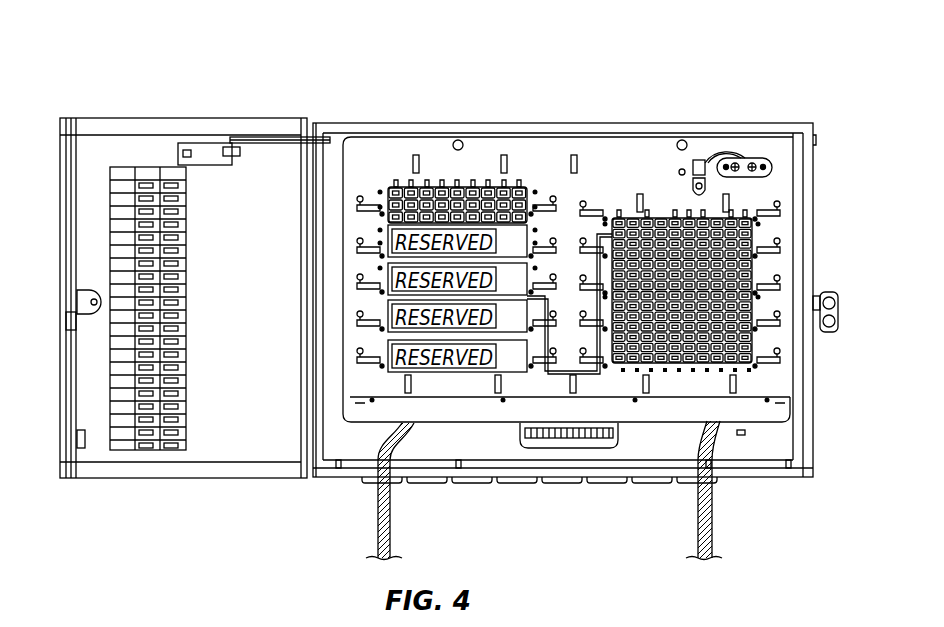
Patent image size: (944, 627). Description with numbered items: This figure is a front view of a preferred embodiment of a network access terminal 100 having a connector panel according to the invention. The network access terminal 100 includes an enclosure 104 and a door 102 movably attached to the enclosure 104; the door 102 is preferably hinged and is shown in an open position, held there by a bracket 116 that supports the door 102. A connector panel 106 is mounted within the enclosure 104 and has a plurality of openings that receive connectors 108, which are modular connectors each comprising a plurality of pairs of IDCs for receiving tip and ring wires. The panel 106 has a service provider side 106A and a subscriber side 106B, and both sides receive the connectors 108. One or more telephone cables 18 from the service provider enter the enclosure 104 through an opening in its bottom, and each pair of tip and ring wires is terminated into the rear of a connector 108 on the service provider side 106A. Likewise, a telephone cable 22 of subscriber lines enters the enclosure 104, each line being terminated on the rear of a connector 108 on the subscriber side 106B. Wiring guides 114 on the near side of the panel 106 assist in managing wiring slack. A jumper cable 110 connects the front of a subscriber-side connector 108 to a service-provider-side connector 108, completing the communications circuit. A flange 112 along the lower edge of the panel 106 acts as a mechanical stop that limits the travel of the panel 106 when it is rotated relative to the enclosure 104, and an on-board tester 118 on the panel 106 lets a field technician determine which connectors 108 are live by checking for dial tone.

The network access terminal 100 is at (75, 65).
The door 102 is at (108, 146).
The enclosure 104 is at (813, 177).
The connector panel 106 is at (582, 153).
The service provider side 106A is at (429, 160).
The subscriber side 106B is at (658, 190).
The connectors 108 is at (465, 183).
The jumper cable 110 is at (578, 368).
The flange 112 is at (433, 415).
The wiring guides 114 is at (357, 243).
The bracket 116 is at (283, 142).
The on-board tester 118 is at (747, 157).
The telephone cable 18 is at (378, 520).
The telephone cable 22 is at (712, 523).